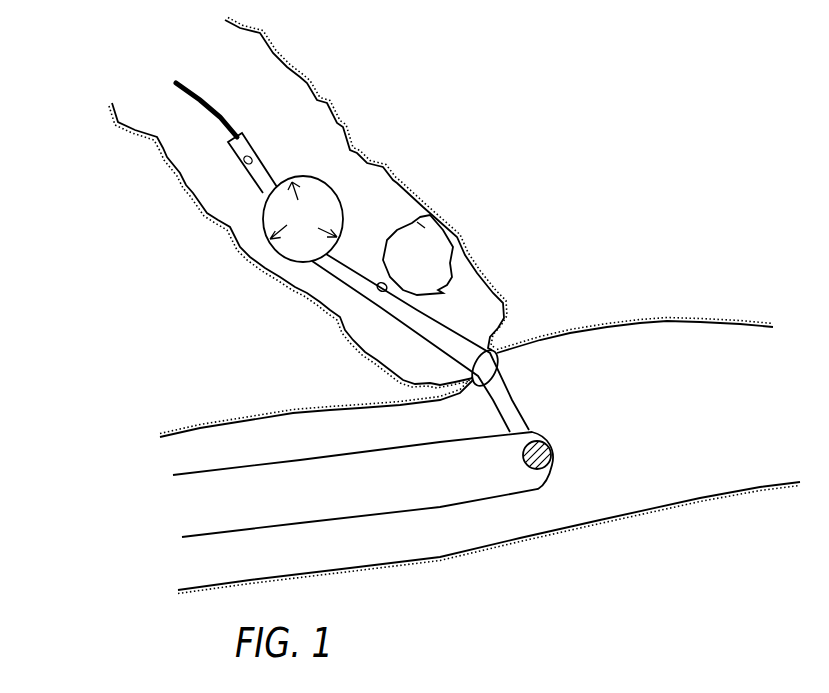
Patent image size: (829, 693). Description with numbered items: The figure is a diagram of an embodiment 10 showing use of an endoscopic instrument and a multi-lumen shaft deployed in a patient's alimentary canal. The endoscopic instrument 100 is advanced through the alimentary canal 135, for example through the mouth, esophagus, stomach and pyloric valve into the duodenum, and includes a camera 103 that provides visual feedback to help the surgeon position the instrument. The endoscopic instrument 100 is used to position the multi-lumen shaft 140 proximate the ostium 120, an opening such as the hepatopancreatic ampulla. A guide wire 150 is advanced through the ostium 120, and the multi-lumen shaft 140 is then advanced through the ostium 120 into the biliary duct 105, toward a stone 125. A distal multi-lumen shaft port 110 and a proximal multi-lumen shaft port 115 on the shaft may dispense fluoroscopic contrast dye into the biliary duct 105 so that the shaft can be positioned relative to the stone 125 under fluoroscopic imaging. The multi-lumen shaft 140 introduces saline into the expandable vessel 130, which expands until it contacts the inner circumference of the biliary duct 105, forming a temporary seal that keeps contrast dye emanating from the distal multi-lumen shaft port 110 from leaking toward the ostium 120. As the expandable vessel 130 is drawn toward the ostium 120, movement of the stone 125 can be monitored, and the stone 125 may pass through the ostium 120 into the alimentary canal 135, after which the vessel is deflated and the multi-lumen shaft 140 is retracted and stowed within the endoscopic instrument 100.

The embodiment 10 is at (52, 50).
The endoscopic instrument 100 is at (233, 478).
The camera 103 is at (533, 470).
The biliary duct 105 is at (155, 145).
The distal multi-lumen shaft port 110 is at (207, 213).
The proximal multi-lumen shaft port 115 is at (378, 292).
The ostium 120 is at (497, 352).
The stone 125 is at (450, 266).
The expandable vessel 130 is at (333, 190).
The alimentary canal 135 is at (678, 350).
The multi-lumen shaft 140 is at (417, 308).
The guide wire 150 is at (210, 103).